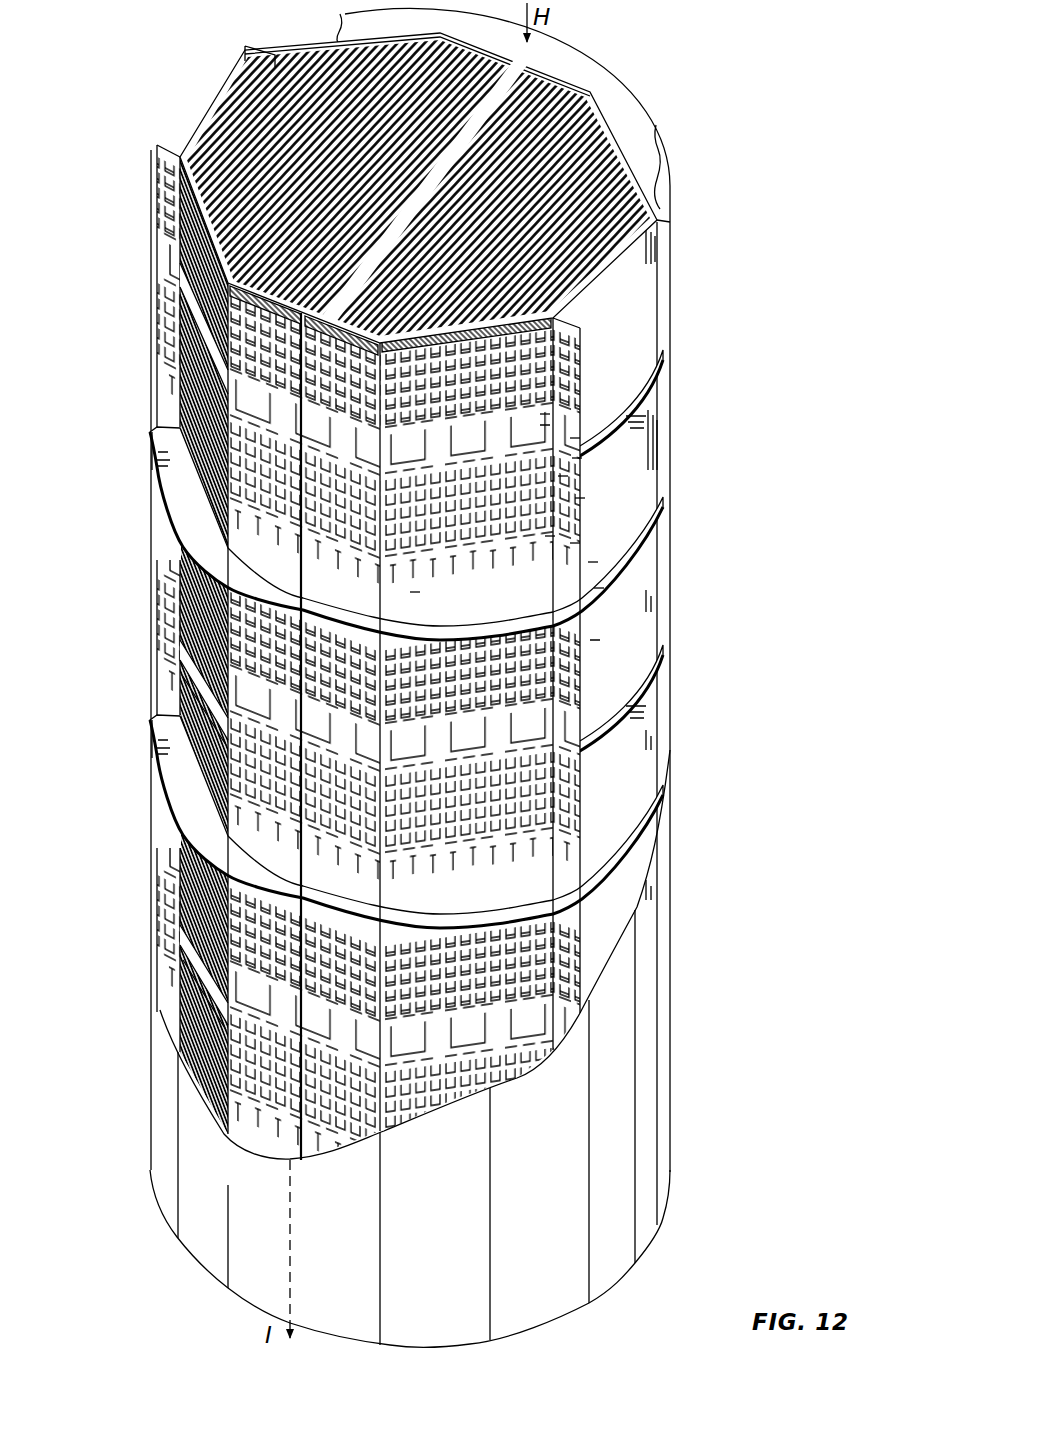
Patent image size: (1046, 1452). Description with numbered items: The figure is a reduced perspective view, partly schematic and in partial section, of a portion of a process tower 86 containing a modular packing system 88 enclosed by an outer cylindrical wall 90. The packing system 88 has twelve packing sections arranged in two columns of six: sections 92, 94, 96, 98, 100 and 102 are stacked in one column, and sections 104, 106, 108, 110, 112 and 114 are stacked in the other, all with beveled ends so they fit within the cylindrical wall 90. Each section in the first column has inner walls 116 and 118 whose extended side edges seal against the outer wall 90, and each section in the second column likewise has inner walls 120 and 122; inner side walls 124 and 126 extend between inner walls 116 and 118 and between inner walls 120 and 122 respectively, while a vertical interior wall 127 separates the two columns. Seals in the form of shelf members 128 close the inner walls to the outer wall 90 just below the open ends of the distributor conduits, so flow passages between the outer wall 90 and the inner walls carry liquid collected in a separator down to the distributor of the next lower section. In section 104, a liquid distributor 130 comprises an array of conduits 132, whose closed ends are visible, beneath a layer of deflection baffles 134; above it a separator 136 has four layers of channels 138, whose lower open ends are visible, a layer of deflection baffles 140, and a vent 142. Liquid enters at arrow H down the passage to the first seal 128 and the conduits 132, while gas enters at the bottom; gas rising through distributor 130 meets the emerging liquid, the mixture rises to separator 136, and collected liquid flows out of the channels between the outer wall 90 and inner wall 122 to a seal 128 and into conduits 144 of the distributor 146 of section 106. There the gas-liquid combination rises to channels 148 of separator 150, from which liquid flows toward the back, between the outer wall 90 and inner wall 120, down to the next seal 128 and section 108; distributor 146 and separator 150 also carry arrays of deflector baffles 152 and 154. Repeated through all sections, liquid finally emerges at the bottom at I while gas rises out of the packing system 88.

The process tower 86 is at (737, 86).
The packing system 88 is at (202, 98).
The outer cylindrical wall 90 is at (652, 975).
The packing section 92 is at (178, 258).
The packing section 94 is at (200, 430).
The packing section 96 is at (200, 620).
The packing section 98 is at (196, 690).
The packing section 100 is at (172, 880).
The packing section 102 is at (186, 976).
The packing section 104 is at (645, 302).
The packing section 106 is at (640, 476).
The packing section 108 is at (640, 612).
The packing section 110 is at (640, 738).
The packing section 112 is at (635, 888).
The packing section 114 is at (520, 1077).
The inner wall 116 is at (322, 50).
The inner wall 118 is at (166, 665).
The inner wall 120 is at (667, 255).
The inner wall 122 is at (215, 556).
The inner side wall 124 is at (176, 140).
The inner side wall 126 is at (664, 222).
The vertical interior wall 127 is at (505, 100).
The shelf member seal 128 is at (545, 428).
The liquid distributor 130 is at (580, 500).
The conduits 132 is at (578, 462).
The deflection baffles 134 is at (575, 442).
The separator 136 is at (582, 367).
The channels 138 is at (545, 418).
The deflection baffles 140 is at (582, 342).
The vent 142 is at (585, 325).
The conduits 144 is at (595, 565).
The distributor 146 is at (600, 590).
The channels 148 is at (548, 540).
The separator 150 is at (575, 545).
The deflector baffles 152 is at (415, 592).
The deflector baffles 154 is at (565, 480).